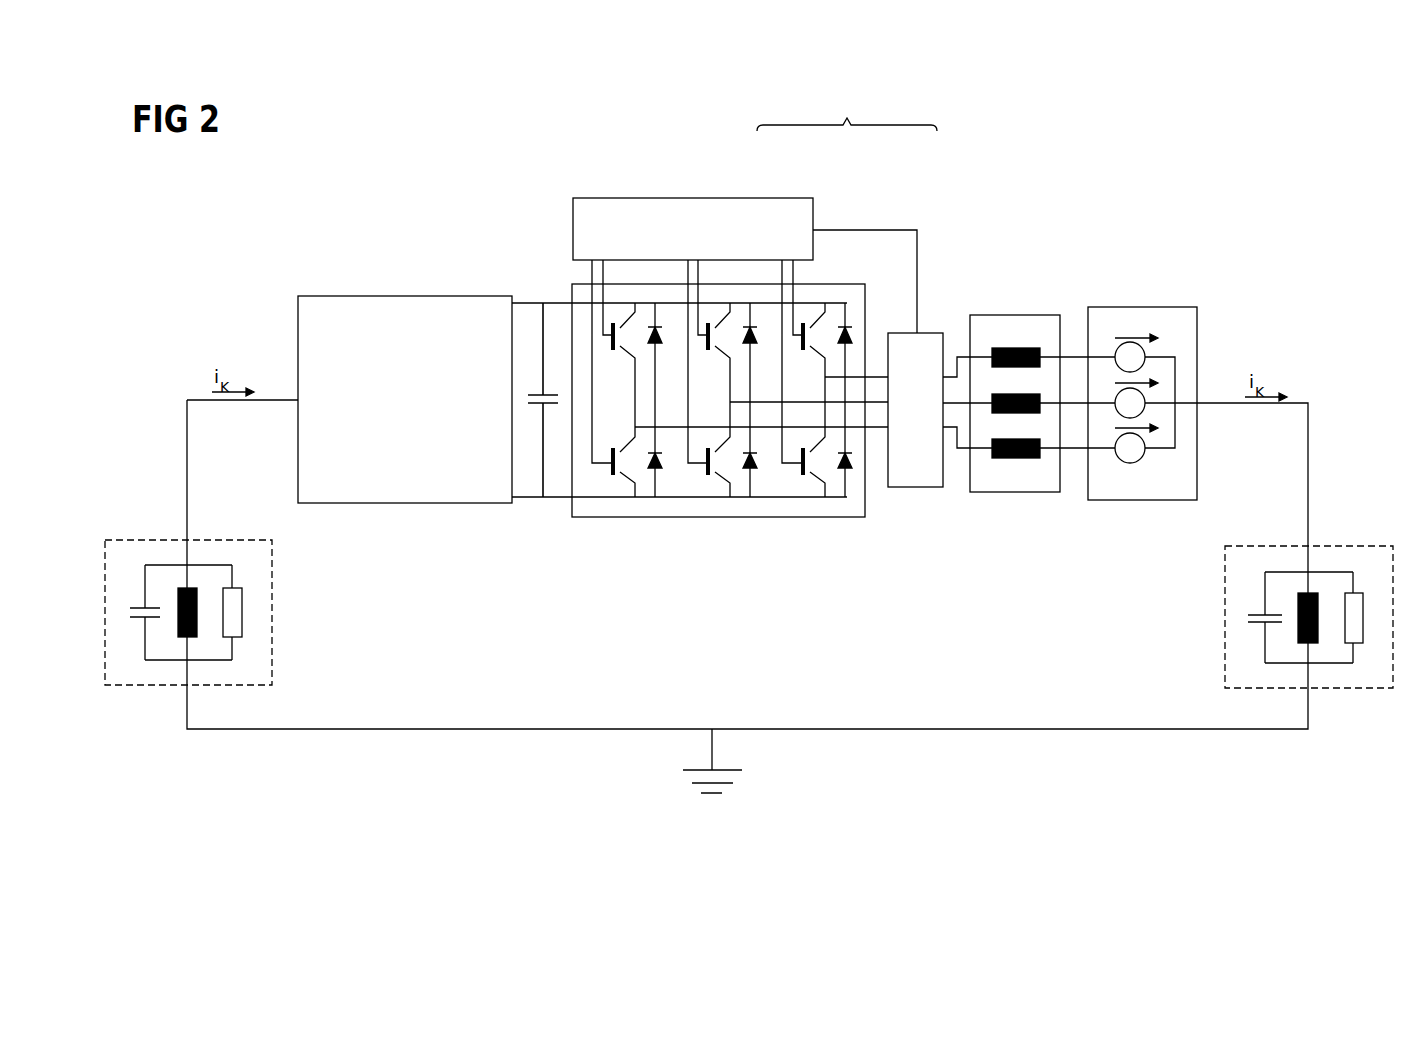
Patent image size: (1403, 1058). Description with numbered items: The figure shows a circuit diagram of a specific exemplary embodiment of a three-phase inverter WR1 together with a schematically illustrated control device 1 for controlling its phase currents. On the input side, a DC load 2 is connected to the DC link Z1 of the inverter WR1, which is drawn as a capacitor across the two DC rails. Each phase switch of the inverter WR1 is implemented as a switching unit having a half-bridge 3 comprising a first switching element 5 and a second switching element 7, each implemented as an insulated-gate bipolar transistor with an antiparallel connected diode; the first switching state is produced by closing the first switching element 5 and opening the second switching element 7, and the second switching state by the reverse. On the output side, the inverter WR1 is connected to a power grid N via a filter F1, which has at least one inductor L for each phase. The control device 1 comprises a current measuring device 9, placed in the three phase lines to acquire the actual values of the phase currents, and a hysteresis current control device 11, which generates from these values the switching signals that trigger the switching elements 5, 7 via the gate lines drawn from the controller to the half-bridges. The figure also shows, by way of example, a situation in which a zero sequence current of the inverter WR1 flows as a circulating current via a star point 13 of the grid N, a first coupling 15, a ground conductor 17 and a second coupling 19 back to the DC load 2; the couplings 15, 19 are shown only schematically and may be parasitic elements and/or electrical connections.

The control device 1 is at (847, 118).
The DC load 2 is at (406, 296).
The half-bridge 3 is at (617, 403).
The first switching element 5 is at (805, 313).
The second switching element 7 is at (818, 452).
The current measuring device 9 is at (932, 333).
The hysteresis current control device 11 is at (750, 198).
The star point 13 is at (1173, 403).
The first coupling 15 is at (1225, 603).
The ground conductor 17 is at (933, 729).
The second coupling 19 is at (272, 597).
The DC link Z1 is at (556, 292).
The inverter WR1 is at (718, 415).
The inductor L is at (1003, 348).
The filter F1 is at (1015, 369).
The power grid N is at (1158, 370).